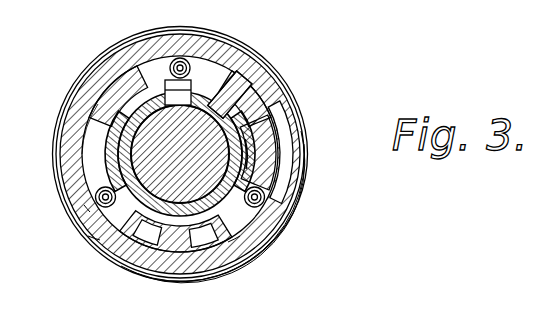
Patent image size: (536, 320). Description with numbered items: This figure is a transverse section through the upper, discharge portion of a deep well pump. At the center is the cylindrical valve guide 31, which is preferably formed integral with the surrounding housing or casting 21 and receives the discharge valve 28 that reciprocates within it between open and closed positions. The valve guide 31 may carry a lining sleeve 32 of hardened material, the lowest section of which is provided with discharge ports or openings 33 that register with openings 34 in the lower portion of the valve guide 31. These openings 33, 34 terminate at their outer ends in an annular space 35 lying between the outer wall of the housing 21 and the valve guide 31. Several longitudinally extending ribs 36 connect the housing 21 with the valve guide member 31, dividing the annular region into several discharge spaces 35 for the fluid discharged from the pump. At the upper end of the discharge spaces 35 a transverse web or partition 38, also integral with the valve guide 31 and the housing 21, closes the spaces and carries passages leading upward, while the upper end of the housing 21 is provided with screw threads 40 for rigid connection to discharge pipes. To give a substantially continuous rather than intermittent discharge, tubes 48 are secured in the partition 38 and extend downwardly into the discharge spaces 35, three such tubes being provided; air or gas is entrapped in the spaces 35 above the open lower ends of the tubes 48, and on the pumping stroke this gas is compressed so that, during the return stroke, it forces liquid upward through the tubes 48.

The housing or casting 21 is at (88, 90).
The discharge valve 28 is at (270, 112).
The cylindrical valve guide 31 is at (255, 148).
The lining sleeve 32 is at (262, 168).
The discharge ports or openings 33 is at (97, 227).
The openings 34 is at (125, 180).
The annular space or discharge spaces 35 is at (130, 60).
The longitudinally extending ribs 36 is at (238, 108).
The transverse web or partition 38 is at (92, 143).
The screw threads 40 is at (88, 198).
The pipes or tubes 48 is at (182, 52).